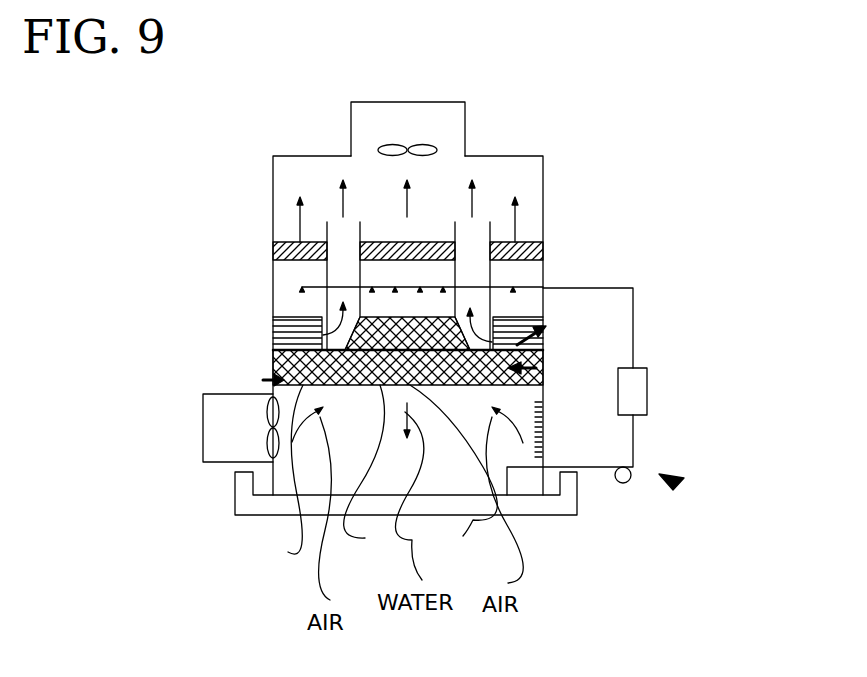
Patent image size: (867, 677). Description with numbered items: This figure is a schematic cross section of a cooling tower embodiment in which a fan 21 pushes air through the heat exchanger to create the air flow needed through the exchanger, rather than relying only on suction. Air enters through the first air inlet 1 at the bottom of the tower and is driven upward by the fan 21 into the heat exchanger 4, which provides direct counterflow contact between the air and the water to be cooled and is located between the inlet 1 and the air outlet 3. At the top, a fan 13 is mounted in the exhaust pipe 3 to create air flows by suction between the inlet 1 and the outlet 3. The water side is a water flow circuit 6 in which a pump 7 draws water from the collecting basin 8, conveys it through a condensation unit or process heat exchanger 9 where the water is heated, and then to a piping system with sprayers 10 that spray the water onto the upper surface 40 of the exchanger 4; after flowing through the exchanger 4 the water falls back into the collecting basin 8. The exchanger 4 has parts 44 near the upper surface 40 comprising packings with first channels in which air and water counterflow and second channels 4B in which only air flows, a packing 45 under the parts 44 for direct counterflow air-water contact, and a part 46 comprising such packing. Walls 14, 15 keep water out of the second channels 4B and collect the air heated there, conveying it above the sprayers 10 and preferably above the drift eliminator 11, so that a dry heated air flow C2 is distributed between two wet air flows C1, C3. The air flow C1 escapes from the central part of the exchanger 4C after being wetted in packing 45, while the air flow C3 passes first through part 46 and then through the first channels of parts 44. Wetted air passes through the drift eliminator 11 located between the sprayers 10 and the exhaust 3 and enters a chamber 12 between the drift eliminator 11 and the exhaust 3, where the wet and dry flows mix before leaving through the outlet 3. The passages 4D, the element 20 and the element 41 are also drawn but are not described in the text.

The first air inlet 1 is at (203, 430).
The air outlet 3 is at (443, 102).
The heat exchanger 4 is at (263, 380).
The second channels 4B is at (272, 318).
The central part of the exchanger 4C is at (466, 478).
The air passage 4D is at (297, 481).
The water flow circuit 6 is at (675, 483).
The pump 7 is at (623, 483).
The collecting basin 8 is at (552, 518).
The process heat exchanger 9 is at (647, 415).
The sprayers 10 is at (547, 289).
The drift eliminator 11 is at (272, 250).
The chamber 12 is at (288, 176).
The fan 13 is at (393, 143).
The wall 14 is at (490, 277).
The wall 15 is at (455, 245).
The casing 20 is at (543, 172).
The fan 21 is at (265, 442).
The upper surface 40 is at (420, 316).
The water flow 41 is at (377, 478).
The parts 44 is at (546, 331).
The packing 45 is at (536, 368).
The part 46 is at (272, 360).
The air flow C1 is at (413, 205).
The air flow C2 is at (343, 207).
The air flow C3 is at (298, 222).